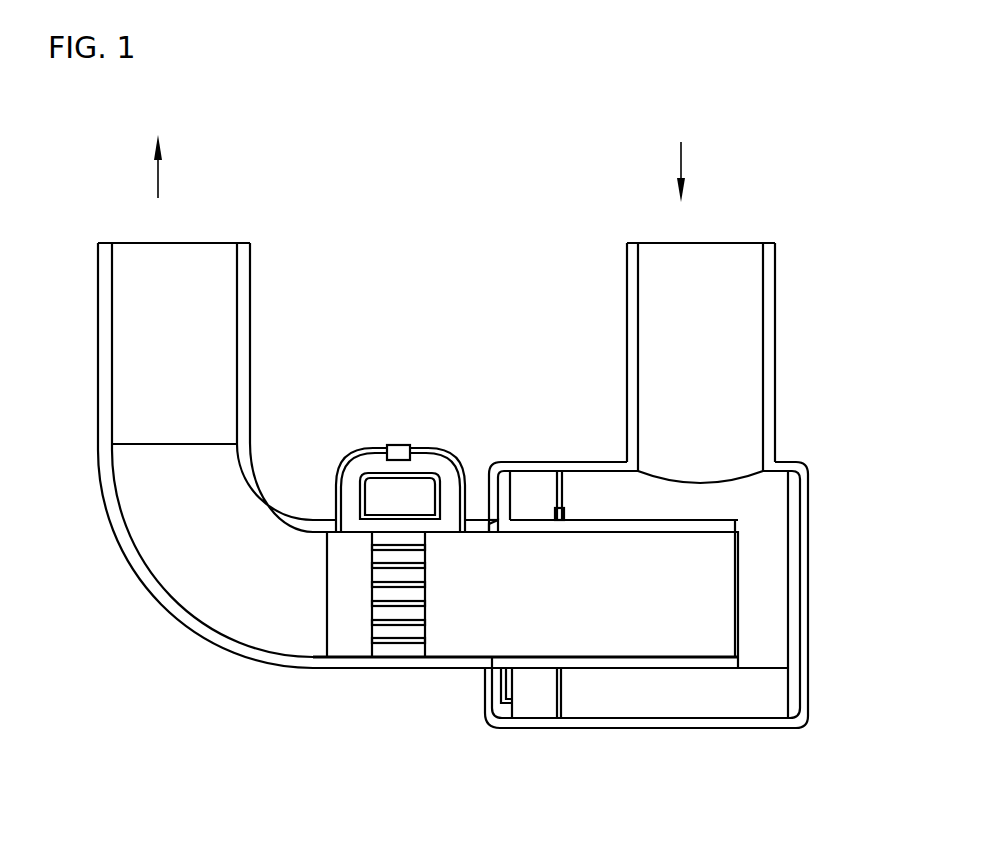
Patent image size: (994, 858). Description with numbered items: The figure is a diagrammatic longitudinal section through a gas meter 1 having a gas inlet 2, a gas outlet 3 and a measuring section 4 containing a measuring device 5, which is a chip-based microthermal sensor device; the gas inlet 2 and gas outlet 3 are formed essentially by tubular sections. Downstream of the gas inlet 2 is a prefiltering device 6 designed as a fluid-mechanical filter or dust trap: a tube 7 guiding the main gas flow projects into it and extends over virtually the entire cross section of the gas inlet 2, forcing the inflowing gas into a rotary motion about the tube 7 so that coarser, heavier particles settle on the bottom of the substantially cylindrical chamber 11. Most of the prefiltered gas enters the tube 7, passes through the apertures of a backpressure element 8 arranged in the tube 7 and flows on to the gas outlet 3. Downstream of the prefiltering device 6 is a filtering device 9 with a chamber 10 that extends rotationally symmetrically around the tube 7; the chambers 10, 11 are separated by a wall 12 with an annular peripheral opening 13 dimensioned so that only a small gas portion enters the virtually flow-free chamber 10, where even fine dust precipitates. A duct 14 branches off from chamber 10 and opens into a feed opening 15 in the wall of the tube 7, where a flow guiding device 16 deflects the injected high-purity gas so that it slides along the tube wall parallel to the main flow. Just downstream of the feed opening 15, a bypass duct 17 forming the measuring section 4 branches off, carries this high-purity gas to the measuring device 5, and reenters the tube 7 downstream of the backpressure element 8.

The gas meter 1 is at (445, 207).
The gas inlet 2 is at (730, 165).
The gas outlet 3 is at (190, 212).
The measuring section 4 is at (438, 437).
The measuring device 5 is at (398, 445).
The prefiltering device 6 is at (780, 598).
The tube 7 is at (627, 660).
The backpressure element 8 is at (388, 642).
The filtering device 9 is at (527, 742).
The chamber 10 is at (518, 705).
The chamber 11 is at (727, 705).
The wall 12 is at (560, 471).
The opening 13 is at (566, 514).
The duct 14 is at (489, 517).
The feed opening 15 is at (492, 527).
The flow guiding device 16 is at (497, 535).
The bypass duct 17 is at (452, 470).